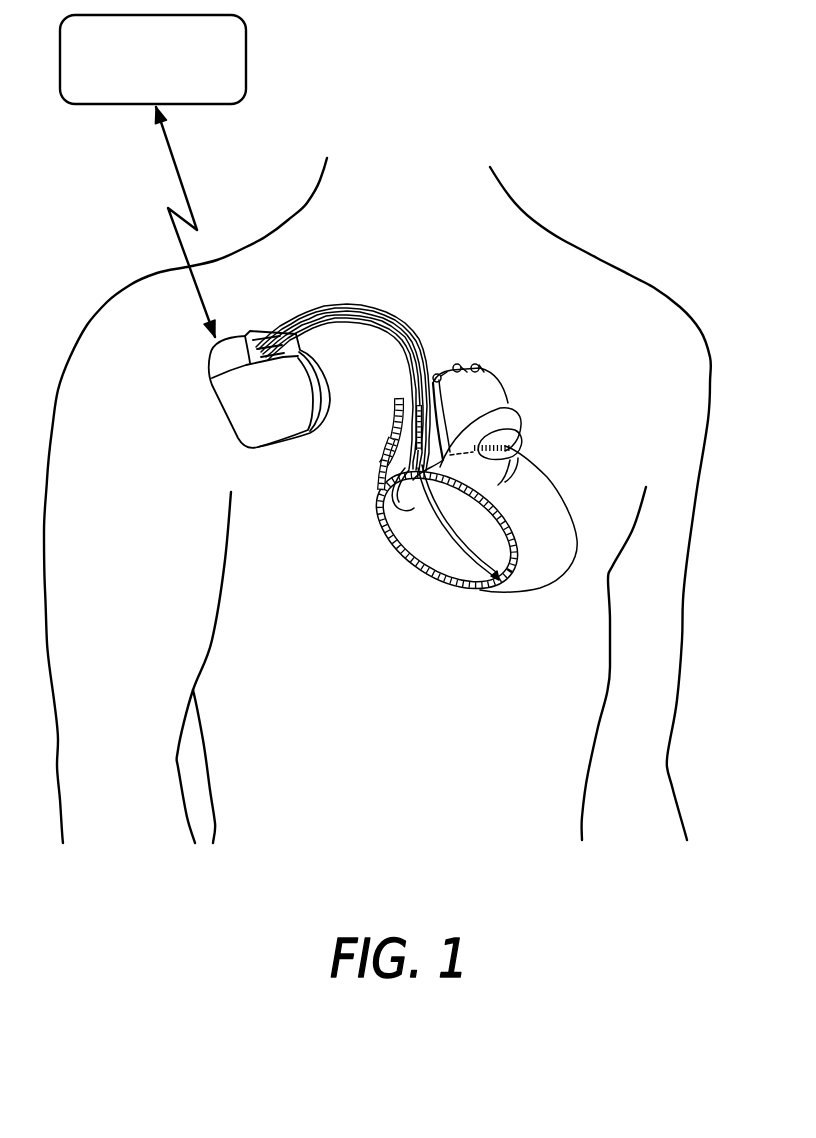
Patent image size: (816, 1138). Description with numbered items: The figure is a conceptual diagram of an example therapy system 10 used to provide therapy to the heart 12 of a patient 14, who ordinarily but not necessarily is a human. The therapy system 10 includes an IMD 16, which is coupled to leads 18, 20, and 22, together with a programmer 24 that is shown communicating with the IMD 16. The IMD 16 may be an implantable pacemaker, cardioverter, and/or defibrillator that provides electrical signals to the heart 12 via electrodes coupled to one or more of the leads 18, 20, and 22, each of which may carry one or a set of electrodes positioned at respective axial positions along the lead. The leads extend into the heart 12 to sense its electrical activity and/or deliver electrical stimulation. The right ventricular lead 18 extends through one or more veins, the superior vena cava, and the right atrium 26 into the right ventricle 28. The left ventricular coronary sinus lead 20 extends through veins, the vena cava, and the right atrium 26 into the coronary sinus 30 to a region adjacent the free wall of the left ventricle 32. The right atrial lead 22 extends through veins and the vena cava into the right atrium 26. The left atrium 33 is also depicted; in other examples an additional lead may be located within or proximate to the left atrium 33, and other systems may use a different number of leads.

The therapy system 10 is at (578, 146).
The heart 12 is at (455, 509).
The patient 14 is at (647, 283).
The IMD 16 is at (212, 418).
The right ventricular lead 18 is at (400, 342).
The left ventricular coronary sinus lead 20 is at (311, 313).
The right atrial lead 22 is at (402, 357).
The programmer 24 is at (135, 86).
The right atrium 26 is at (396, 488).
The right ventricle 28 is at (423, 545).
The coronary sinus 30 is at (435, 393).
The left ventricle 32 is at (537, 507).
The left atrium 33 is at (483, 406).